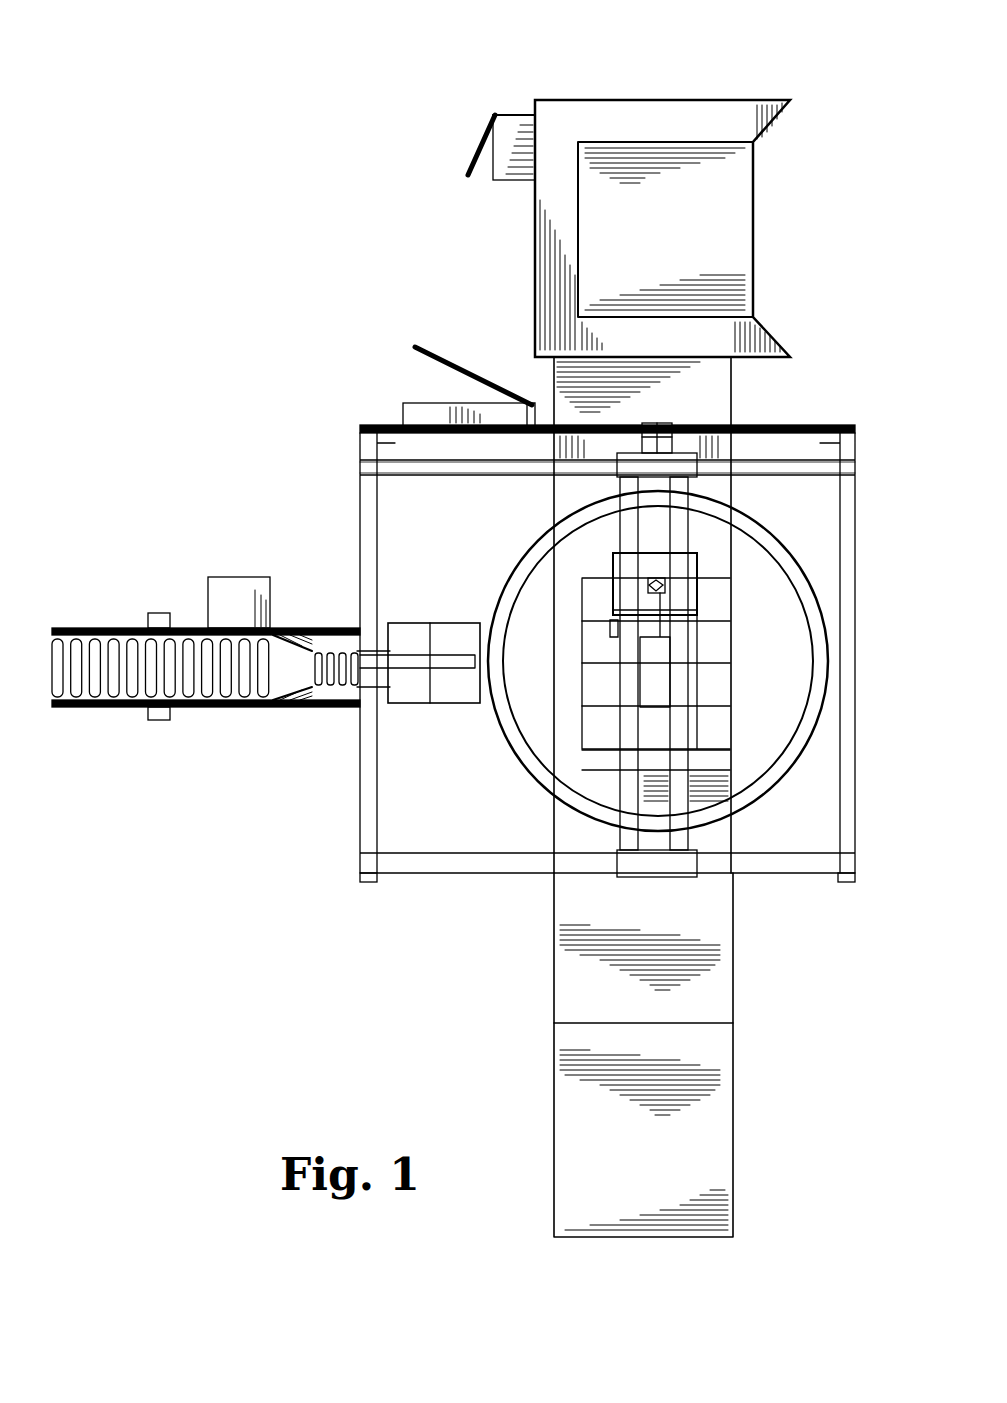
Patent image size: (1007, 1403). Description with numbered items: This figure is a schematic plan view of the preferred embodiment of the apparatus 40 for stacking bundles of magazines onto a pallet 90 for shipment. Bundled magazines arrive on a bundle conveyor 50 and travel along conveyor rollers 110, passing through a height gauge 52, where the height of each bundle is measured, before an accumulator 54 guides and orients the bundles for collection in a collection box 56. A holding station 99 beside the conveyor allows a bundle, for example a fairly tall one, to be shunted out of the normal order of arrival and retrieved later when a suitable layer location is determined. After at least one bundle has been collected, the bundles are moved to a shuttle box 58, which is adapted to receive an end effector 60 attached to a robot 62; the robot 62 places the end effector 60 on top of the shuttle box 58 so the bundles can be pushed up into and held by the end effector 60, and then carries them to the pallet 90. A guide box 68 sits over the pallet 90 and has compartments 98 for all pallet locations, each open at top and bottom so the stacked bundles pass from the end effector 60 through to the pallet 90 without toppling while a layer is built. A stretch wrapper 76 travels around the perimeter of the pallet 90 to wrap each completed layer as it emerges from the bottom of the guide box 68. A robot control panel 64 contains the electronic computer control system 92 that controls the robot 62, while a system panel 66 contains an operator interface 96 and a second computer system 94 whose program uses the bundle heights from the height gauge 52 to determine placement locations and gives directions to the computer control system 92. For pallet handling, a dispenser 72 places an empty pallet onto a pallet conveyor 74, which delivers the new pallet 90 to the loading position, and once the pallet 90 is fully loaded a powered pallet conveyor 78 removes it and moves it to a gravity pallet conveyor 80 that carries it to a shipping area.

The apparatus 40 is at (445, 968).
The bundle conveyor 50 is at (247, 708).
The height gauge 52 is at (158, 718).
The accumulator 54 is at (320, 710).
The collection box 56 is at (410, 627).
The shuttle box 58 is at (450, 630).
The end effector 60 is at (605, 620).
The robot 62 is at (611, 557).
The robot control panel 64 is at (493, 408).
The system panel 66 is at (503, 168).
The guide box 68 is at (725, 603).
The dispenser 72 is at (767, 130).
The pallet conveyor 74 is at (720, 392).
The stretch wrapper 76 is at (722, 567).
The powered pallet conveyor 78 is at (580, 968).
The gravity pallet conveyor 80 is at (585, 1078).
The pallet 90 is at (730, 740).
The electronic computer control system 92 is at (430, 410).
The second computer system 94 is at (500, 137).
The operator interface 96 is at (510, 113).
The compartments 98 is at (722, 644).
The holding station 99 is at (214, 577).
The conveyor rollers 110 is at (88, 628).